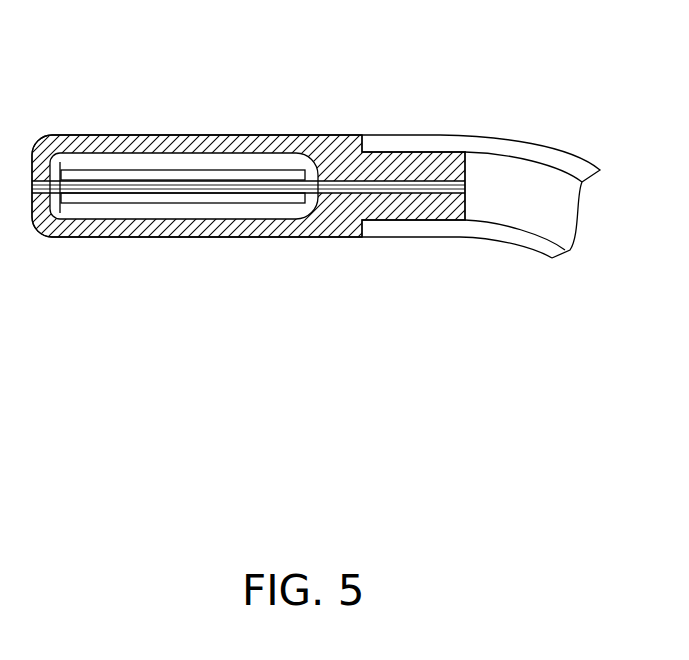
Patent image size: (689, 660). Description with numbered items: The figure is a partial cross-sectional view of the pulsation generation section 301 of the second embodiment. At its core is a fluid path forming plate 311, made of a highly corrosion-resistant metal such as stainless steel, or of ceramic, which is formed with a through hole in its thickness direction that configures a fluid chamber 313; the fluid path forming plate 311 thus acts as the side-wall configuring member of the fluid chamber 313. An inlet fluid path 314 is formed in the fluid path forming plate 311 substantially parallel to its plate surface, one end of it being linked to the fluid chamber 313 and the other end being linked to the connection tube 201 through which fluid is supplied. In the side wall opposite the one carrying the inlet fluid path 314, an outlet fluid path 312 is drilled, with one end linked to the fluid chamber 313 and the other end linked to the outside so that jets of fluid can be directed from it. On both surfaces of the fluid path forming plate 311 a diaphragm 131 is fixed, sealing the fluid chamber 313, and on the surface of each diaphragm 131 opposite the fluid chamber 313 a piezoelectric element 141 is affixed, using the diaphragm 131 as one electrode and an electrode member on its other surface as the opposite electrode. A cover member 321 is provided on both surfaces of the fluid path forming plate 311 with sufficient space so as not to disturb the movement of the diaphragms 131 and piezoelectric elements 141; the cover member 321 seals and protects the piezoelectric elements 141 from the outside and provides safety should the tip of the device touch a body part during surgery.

The pulsation generation section 301 is at (270, 28).
The cover member 321 is at (160, 133).
The outlet fluid path 312 is at (41, 202).
The diaphragm 131 is at (59, 133).
The piezoelectric element 141 is at (285, 172).
The fluid chamber 313 is at (155, 187).
The inlet fluid path 314 is at (388, 193).
The fluid path forming plate 311 is at (363, 193).
The connection tube 201 is at (483, 231).